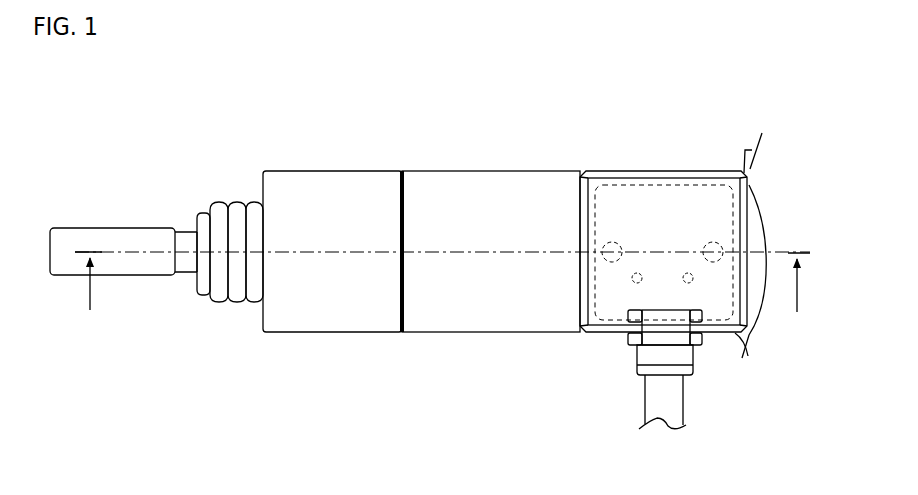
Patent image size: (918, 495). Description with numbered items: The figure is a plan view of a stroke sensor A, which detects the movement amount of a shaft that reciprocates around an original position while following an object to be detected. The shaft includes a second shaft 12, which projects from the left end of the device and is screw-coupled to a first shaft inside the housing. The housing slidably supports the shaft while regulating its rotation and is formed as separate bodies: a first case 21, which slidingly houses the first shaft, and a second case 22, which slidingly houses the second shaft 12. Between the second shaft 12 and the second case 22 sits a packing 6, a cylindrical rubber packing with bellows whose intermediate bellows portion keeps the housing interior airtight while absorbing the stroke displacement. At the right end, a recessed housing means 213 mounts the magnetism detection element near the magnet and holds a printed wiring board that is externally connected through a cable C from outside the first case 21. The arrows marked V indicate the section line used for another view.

The second shaft 12 is at (100, 240).
The second case 22 is at (283, 182).
The first case 21 is at (455, 182).
The housing means 213 is at (673, 229).
The packing 6 is at (222, 288).
The stroke sensor A is at (176, 141).
The cable C is at (655, 393).
The section line V is at (442, 296).